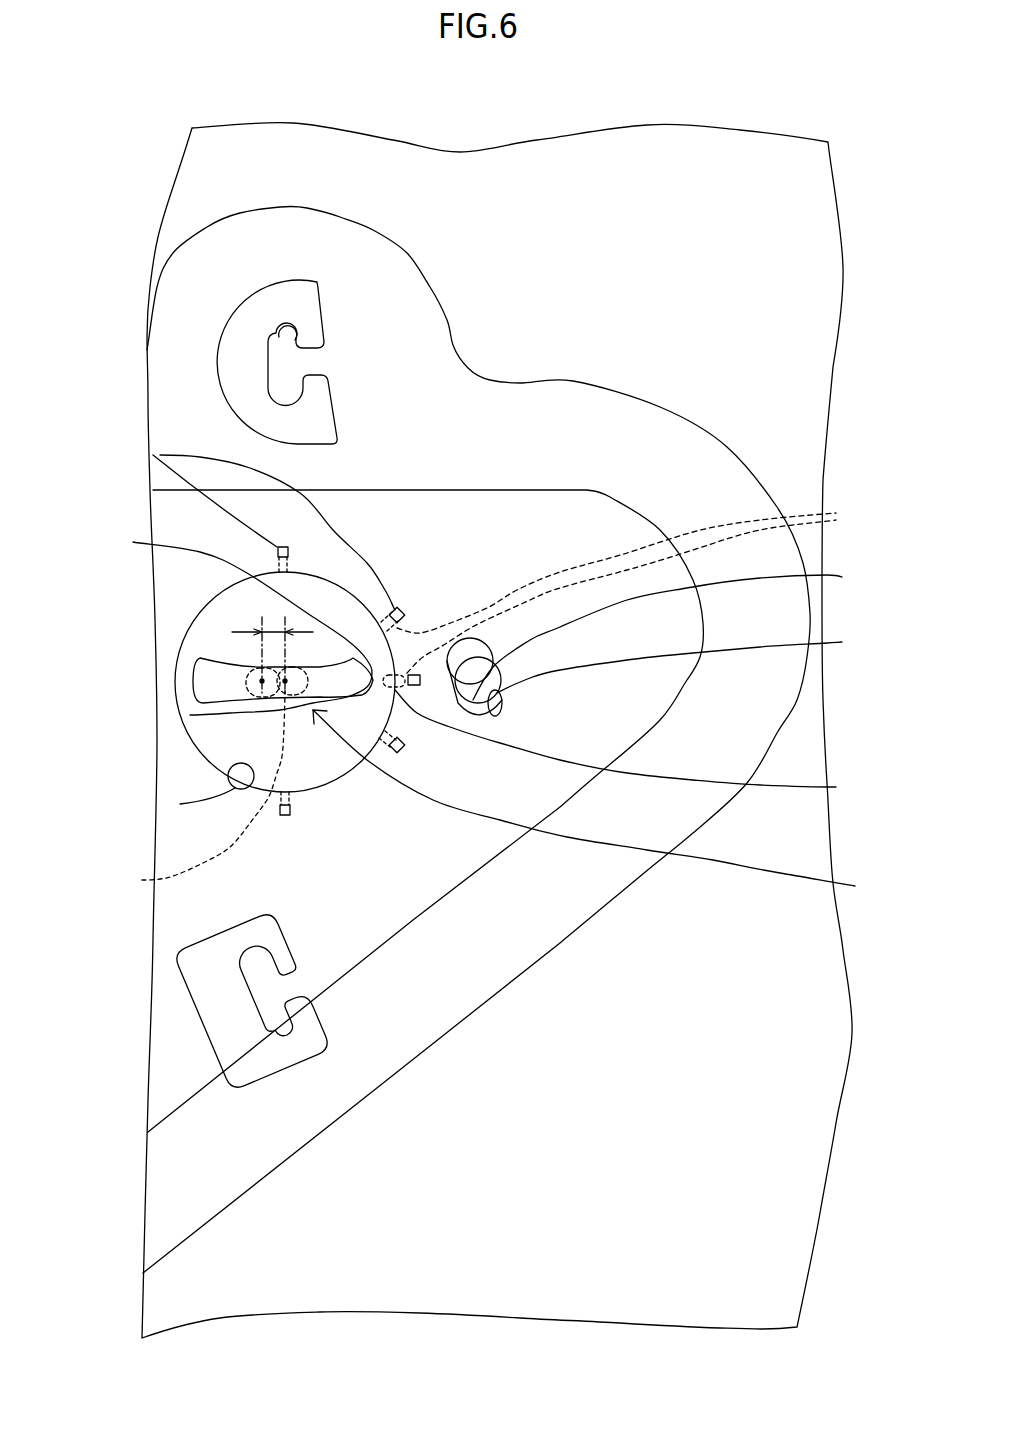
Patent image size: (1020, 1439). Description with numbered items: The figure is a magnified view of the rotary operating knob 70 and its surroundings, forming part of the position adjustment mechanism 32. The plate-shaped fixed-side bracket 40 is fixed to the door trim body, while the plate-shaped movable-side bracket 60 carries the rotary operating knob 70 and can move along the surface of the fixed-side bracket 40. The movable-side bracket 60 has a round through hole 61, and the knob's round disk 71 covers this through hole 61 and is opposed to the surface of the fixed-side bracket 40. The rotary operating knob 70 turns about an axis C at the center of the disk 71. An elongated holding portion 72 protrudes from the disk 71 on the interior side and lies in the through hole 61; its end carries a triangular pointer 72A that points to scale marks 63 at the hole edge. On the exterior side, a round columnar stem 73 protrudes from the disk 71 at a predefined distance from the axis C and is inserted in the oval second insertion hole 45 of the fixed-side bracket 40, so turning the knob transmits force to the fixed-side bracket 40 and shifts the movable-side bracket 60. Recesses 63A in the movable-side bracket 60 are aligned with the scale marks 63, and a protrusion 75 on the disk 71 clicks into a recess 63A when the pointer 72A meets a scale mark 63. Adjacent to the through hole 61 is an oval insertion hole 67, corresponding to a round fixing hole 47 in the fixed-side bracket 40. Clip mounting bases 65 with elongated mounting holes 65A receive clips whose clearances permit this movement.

The fixed-side bracket 40 is at (805, 383).
The movable-side bracket 60 is at (170, 920).
The clip mounting bases 65 is at (252, 323).
The mounting holes 65A is at (322, 332).
The scale marks 63 is at (153, 455).
The recesses 63A is at (638, 587).
The fixing hole 47 is at (672, 631).
The insertion hole 67 is at (659, 672).
The protrusion 75 is at (630, 745).
The position adjustment mechanism 32 is at (598, 806).
The rotary operating knob 70 is at (228, 606).
The disk 71 is at (227, 743).
The holding portion 72 is at (203, 686).
The pointer 72A is at (231, 622).
The stem 73 is at (247, 670).
The axis C is at (190, 717).
The through hole 61 is at (180, 804).
The second insertion hole 45 is at (200, 794).